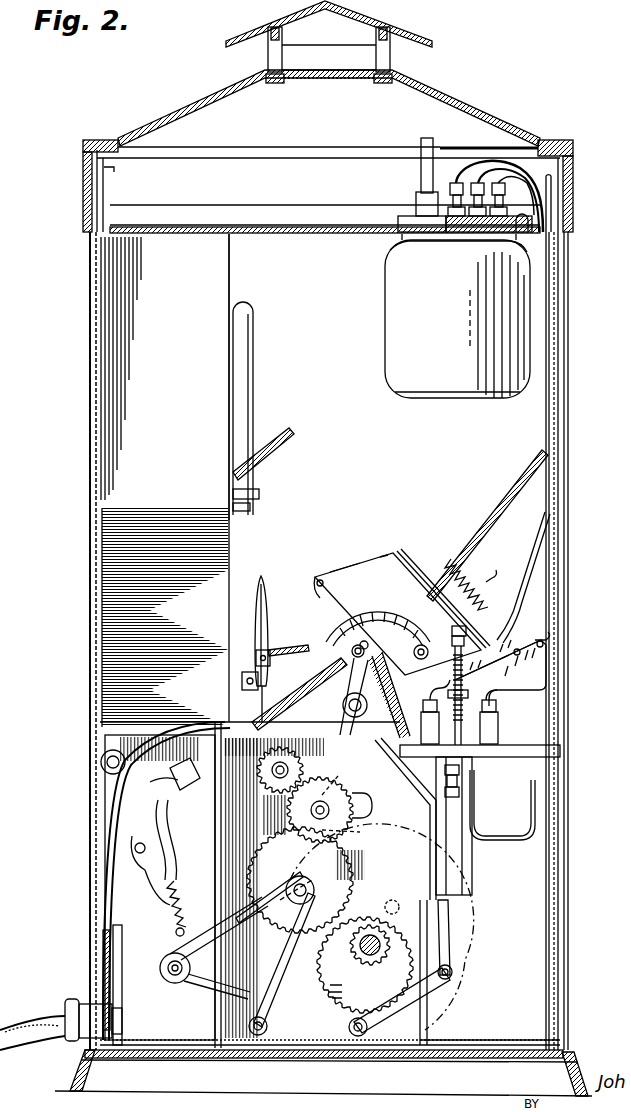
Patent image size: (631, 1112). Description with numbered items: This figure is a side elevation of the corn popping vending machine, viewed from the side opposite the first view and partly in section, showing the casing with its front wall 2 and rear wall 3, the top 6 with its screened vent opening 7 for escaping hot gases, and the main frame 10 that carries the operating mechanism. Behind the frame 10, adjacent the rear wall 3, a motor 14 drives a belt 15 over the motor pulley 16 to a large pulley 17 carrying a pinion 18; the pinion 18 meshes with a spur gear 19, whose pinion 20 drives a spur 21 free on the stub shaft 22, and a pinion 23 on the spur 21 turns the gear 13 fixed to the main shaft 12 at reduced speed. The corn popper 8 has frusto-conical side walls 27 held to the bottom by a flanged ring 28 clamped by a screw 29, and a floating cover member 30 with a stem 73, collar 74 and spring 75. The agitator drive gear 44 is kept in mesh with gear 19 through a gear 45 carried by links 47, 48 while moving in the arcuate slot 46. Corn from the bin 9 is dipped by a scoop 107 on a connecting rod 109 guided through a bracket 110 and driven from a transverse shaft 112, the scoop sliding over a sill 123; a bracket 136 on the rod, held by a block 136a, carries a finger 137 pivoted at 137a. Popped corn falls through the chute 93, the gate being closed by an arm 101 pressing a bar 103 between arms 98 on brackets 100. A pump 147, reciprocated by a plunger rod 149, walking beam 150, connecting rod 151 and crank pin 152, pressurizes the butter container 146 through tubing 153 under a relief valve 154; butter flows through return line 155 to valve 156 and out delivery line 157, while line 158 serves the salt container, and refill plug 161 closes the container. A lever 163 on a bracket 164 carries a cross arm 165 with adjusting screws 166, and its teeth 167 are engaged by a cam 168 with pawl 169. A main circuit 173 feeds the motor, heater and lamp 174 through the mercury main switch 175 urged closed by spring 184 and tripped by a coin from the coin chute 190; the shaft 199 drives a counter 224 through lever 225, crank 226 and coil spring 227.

The front wall 2 is at (560, 776).
The rear wall 3 is at (98, 706).
The top 6 is at (450, 102).
The screened vent opening 7 is at (363, 66).
The corn popper 8 is at (382, 546).
The bin 9 is at (240, 278).
The frame 10 is at (428, 1030).
The main shaft 12 is at (306, 886).
The gear 13 is at (292, 848).
The motor 14 is at (145, 955).
The belt 15 is at (219, 948).
The motor pulley 16 is at (188, 958).
The large pulley 17 is at (466, 921).
The pinion 18 is at (365, 965).
The spur gear 19 is at (358, 872).
The pinion 20 is at (285, 886).
The spur 21 is at (339, 983).
The stub shaft 22 is at (385, 938).
The pinion 23 is at (398, 907).
The side walls 27 is at (362, 568).
The flanged ring 28 is at (333, 587).
The screw 29 is at (322, 580).
The cover member 30 is at (396, 552).
The gear 44 is at (300, 762).
The gear 45 is at (340, 790).
The arcuate slot 46 is at (366, 800).
The link 47 is at (334, 778).
The link 48 is at (349, 832).
The stem 73 is at (470, 598).
The collar 74 is at (500, 562).
The spring 75 is at (462, 576).
The chute 93 is at (500, 673).
The upturned arms 98 is at (528, 637).
The brackets 100 is at (498, 660).
The arm 101 is at (540, 523).
The bar 103 is at (533, 623).
The corn scoop 107 is at (262, 470).
The connecting rod 109 is at (254, 366).
The bracket 110 is at (260, 494).
The transverse shaft 112 is at (389, 872).
The sill 123 is at (250, 512).
The bracket 136 is at (266, 583).
The block 136a is at (242, 682).
The finger 137 is at (304, 648).
The pivot 137a is at (256, 654).
The container 146 is at (457, 316).
The pump 147 is at (472, 872).
The plunger rod 149 is at (450, 943).
The walking beam 150 is at (330, 1004).
The connecting rod 151 is at (280, 960).
The crank pin 152 is at (269, 897).
The tubing 153 is at (498, 720).
The relief valve 154 is at (455, 183).
The return line 155 is at (530, 825).
The valve 156 is at (460, 772).
The delivery line 157 is at (392, 748).
The line 158 is at (452, 712).
The refill plug 161 is at (416, 200).
The lever 163 is at (390, 632).
The bracket 164 is at (396, 696).
The cross arm 165 is at (428, 648).
The adjusting screws 166 is at (466, 630).
The teeth 167 is at (362, 648).
The cam 168 is at (299, 694).
The pawl 169 is at (368, 644).
The main circuit 173 is at (55, 1016).
The auxiliary lamp 174 is at (122, 982).
The main switch 175 is at (112, 788).
The spring 184 is at (150, 780).
The coin chute 190 is at (524, 466).
The shaft 199 is at (150, 822).
The counter mechanism 224 is at (148, 874).
The lever 225 is at (138, 855).
The crank 226 is at (167, 932).
The coil spring 227 is at (166, 904).